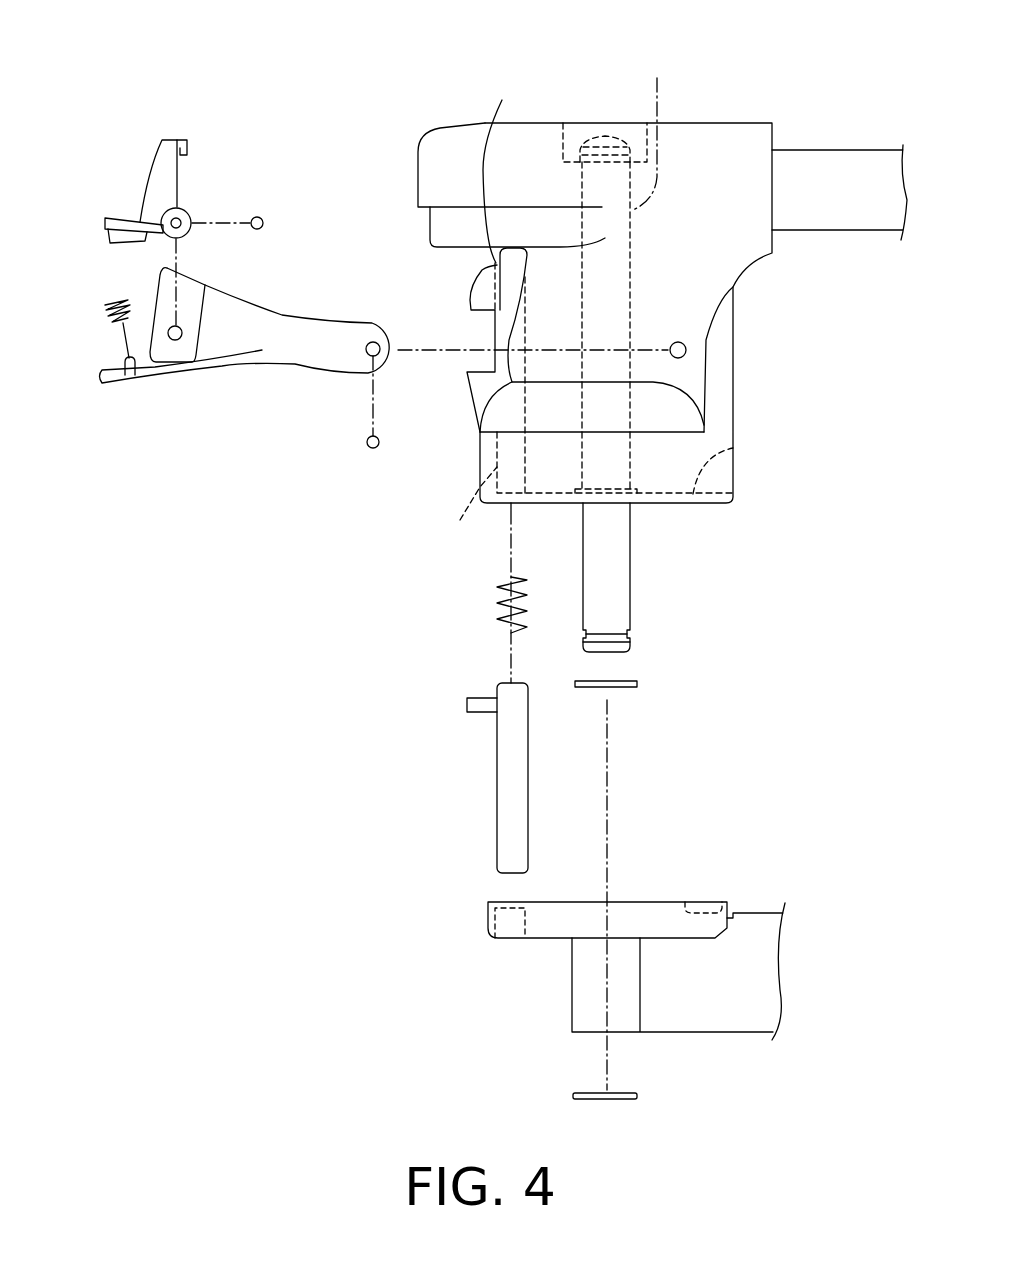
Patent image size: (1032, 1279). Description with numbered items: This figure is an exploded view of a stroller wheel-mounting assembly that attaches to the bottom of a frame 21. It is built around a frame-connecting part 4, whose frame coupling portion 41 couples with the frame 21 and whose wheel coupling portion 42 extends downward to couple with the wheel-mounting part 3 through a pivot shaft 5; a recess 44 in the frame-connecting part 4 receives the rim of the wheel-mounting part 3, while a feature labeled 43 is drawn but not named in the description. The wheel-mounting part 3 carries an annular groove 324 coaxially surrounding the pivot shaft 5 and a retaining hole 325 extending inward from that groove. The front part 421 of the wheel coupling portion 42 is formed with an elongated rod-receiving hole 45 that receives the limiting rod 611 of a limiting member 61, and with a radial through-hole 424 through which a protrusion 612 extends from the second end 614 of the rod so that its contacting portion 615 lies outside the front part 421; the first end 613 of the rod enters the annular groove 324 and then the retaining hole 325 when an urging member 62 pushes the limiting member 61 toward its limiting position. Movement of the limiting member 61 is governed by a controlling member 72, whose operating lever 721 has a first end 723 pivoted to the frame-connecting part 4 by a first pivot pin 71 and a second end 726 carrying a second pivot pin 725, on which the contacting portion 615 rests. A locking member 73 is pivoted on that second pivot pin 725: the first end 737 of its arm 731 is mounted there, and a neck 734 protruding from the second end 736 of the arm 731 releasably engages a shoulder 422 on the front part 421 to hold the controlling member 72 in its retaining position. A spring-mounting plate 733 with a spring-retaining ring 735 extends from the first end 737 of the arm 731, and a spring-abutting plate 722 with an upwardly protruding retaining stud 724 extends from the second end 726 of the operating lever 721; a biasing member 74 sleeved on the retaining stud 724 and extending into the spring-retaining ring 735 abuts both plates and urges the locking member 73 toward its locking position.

The wheel-mounting part 3 is at (530, 975).
The frame-connecting part 4 is at (688, 106).
The pivot shaft 5 is at (637, 530).
The frame 21 is at (837, 178).
The frame coupling portion 41 is at (722, 145).
The wheel coupling portion 42 is at (717, 328).
The channel 43 is at (618, 130).
The recess 44 is at (733, 448).
The rod-receiving hole 45 is at (466, 513).
The limiting member 61 is at (490, 786).
The urging member 62 is at (500, 617).
The first pivot pin 71 is at (368, 452).
The controlling member 72 is at (287, 375).
The locking member 73 is at (140, 147).
The biasing member 74 is at (107, 318).
The annular groove 324 is at (513, 908).
The retaining hole 325 is at (503, 923).
The front part 421 is at (480, 467).
The shoulder 422 is at (505, 163).
The radial through-hole 424 is at (480, 355).
The limiting rod 611 is at (518, 760).
The protrusion 612 is at (483, 705).
The first end 613 is at (518, 865).
The second end 614 is at (513, 693).
The contacting portion 615 is at (467, 705).
The operating lever 721 is at (222, 373).
The spring-abutting plate 722 is at (145, 375).
The first end 723 is at (323, 335).
The retaining stud 724 is at (125, 368).
The second pivot pin 725 is at (258, 214).
The second end 726 is at (175, 358).
The arm 731 is at (157, 182).
The spring-mounting plate 733 is at (105, 218).
The neck 734 is at (182, 138).
The spring-retaining ring 735 is at (122, 235).
The second end 736 is at (165, 138).
The first end 737 is at (190, 232).